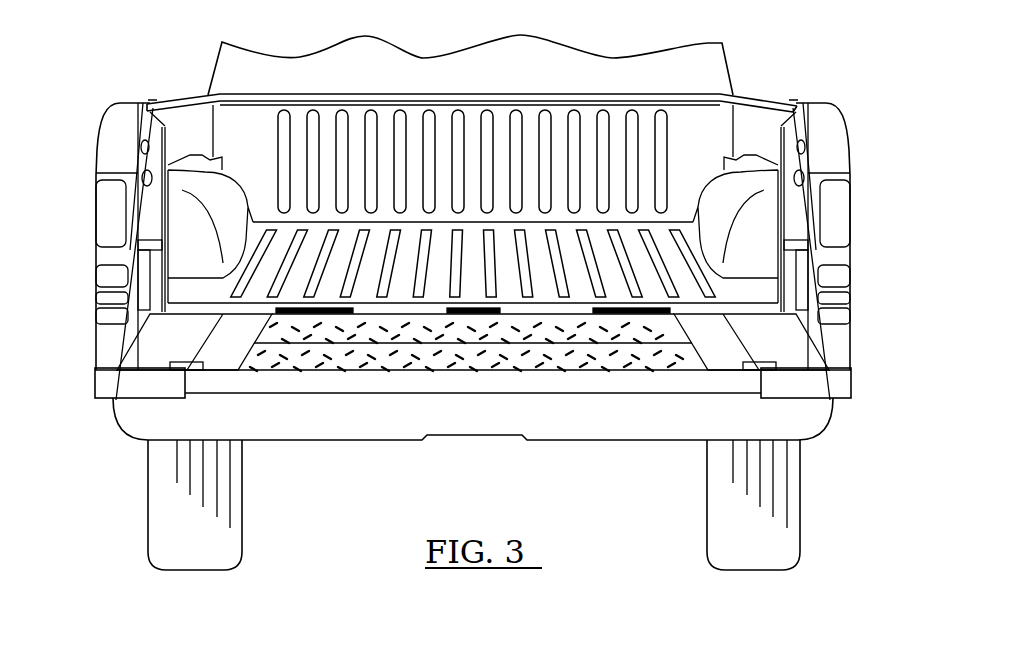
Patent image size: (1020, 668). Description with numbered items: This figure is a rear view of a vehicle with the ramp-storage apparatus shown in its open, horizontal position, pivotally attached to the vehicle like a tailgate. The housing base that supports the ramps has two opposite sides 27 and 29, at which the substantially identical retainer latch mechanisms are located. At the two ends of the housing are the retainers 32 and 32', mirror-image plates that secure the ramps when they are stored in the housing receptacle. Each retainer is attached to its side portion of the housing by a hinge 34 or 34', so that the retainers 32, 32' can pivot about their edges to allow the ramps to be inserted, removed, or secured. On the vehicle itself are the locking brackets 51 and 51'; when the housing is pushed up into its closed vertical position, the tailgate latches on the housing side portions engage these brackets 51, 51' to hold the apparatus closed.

The side of housing base 27 is at (337, 305).
The side of housing base 29 is at (633, 305).
The retainer 32 is at (157, 326).
The retainer 32' is at (794, 328).
The hinge 34 is at (113, 397).
The hinge 34' is at (838, 400).
The locking bracket 51 is at (137, 216).
The locking bracket 51' is at (809, 219).